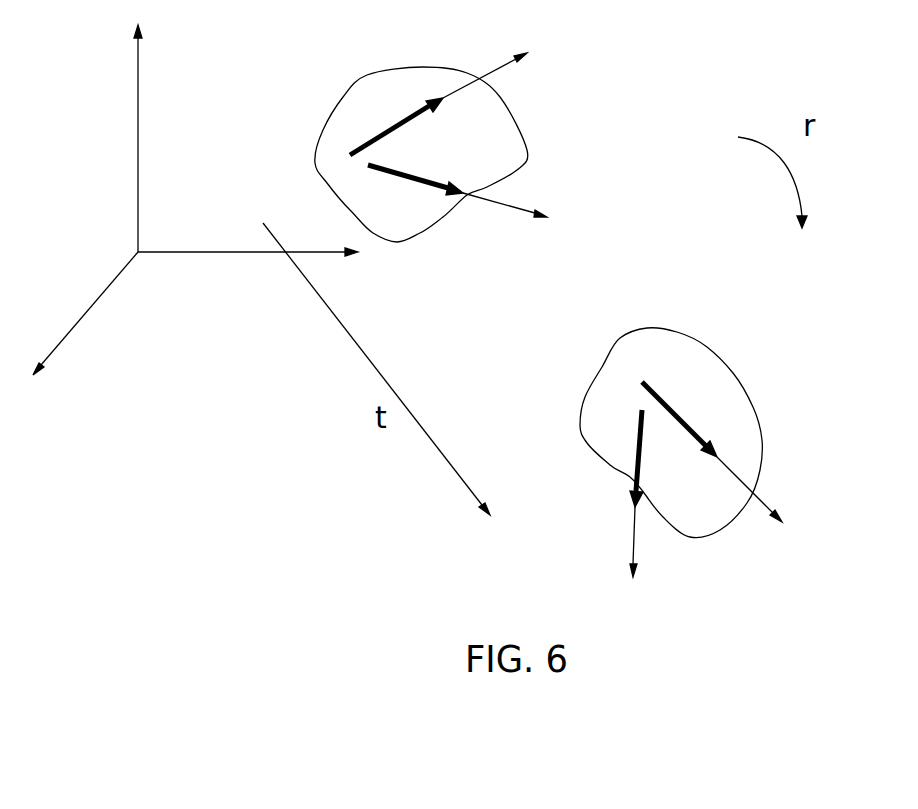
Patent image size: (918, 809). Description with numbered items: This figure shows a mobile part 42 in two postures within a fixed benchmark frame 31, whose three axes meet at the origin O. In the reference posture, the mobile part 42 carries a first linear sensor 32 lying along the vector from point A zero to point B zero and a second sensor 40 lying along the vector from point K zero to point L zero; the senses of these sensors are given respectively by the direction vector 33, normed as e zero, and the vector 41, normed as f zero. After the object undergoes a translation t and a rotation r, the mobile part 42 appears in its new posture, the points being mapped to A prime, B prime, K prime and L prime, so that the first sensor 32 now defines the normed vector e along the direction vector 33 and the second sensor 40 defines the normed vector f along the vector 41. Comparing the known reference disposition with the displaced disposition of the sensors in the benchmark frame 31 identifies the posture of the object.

The benchmark frame 31 is at (165, 289).
The linear sensor 32 is at (428, 113).
The direction vector 33 is at (470, 88).
The second sensor 40 is at (435, 193).
The vector 41 is at (502, 213).
The mobile part 42 is at (382, 92).